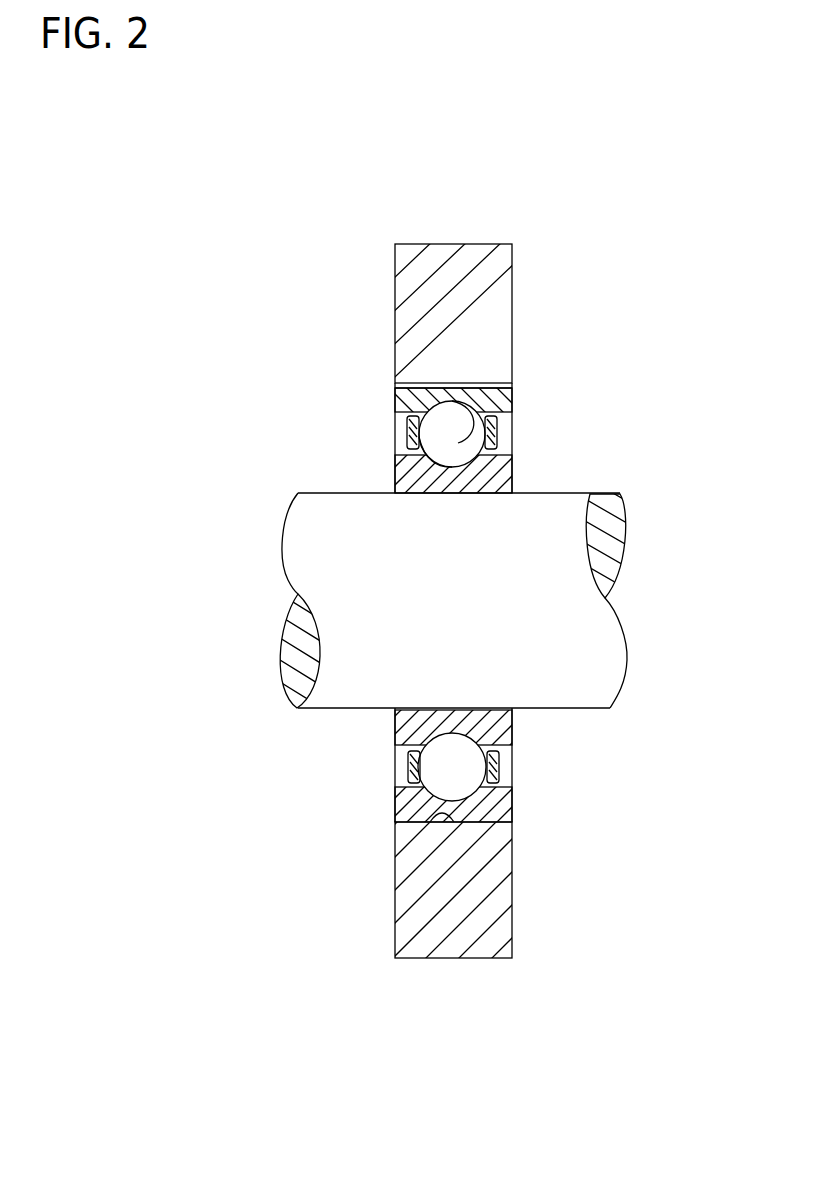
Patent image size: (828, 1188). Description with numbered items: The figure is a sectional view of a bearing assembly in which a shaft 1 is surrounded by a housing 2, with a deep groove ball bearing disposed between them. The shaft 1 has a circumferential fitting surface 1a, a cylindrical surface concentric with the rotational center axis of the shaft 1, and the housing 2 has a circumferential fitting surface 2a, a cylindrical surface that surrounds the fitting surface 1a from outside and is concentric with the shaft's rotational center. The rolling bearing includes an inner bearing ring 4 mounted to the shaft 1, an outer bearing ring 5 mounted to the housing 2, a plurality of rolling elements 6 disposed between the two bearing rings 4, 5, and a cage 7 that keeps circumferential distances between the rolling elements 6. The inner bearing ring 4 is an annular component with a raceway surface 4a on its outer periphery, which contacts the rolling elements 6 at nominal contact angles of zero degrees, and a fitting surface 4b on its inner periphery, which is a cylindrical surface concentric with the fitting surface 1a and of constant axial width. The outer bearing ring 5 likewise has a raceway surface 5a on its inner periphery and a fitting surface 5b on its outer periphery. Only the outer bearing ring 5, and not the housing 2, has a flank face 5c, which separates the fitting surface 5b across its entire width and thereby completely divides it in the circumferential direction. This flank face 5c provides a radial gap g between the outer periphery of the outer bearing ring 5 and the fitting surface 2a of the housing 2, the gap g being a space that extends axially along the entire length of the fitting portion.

The shaft 1 is at (552, 677).
The fitting surface 1a is at (397, 460).
The housing 2 is at (458, 272).
The fitting surface 2a is at (424, 822).
The inner bearing ring 4 is at (514, 473).
The raceway surface 4a is at (450, 429).
The fitting surface 4b is at (458, 493).
The outer bearing ring 5 is at (510, 807).
The raceway surface 5a is at (496, 428).
The fitting surface 5b is at (470, 822).
The flank face 5c is at (449, 386).
The rolling elements 6 is at (410, 401).
The cage 7 is at (408, 768).
The radial gap g is at (410, 385).